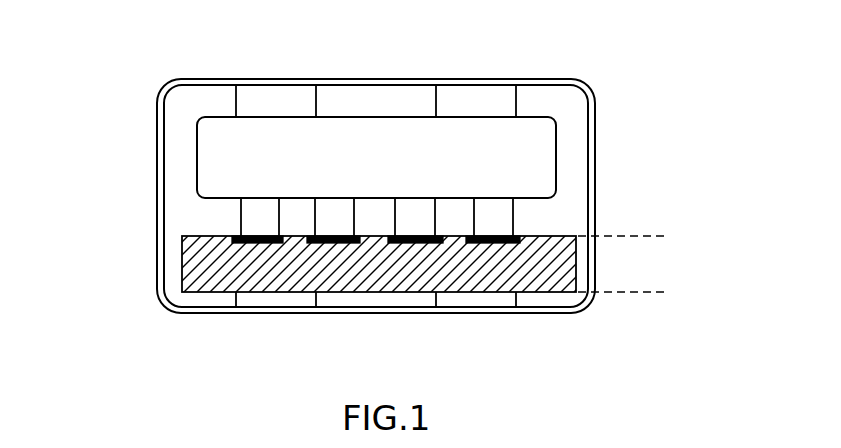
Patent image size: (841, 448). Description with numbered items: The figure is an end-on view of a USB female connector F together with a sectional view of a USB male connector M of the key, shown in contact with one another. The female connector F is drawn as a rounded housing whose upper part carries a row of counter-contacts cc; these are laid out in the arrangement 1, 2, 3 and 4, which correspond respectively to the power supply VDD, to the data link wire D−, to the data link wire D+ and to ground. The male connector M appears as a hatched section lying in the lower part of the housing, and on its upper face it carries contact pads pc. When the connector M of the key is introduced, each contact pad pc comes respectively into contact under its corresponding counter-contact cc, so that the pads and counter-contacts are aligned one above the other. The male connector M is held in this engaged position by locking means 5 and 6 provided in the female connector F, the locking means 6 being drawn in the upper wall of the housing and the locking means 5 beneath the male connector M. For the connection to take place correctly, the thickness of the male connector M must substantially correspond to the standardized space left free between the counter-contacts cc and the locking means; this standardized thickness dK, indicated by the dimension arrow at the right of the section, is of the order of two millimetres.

The female connector F is at (583, 90).
The locking means 6 is at (473, 107).
The locking means 5 is at (484, 298).
The male connector M is at (183, 293).
The contact pads pc is at (228, 240).
The counter-contacts cc is at (289, 202).
The counter-contact position 1 is at (260, 202).
The counter-contact position 2 is at (334, 202).
The counter-contact position 3 is at (415, 202).
The counter-contact position 4 is at (493, 202).
The standardized thickness dK is at (661, 237).